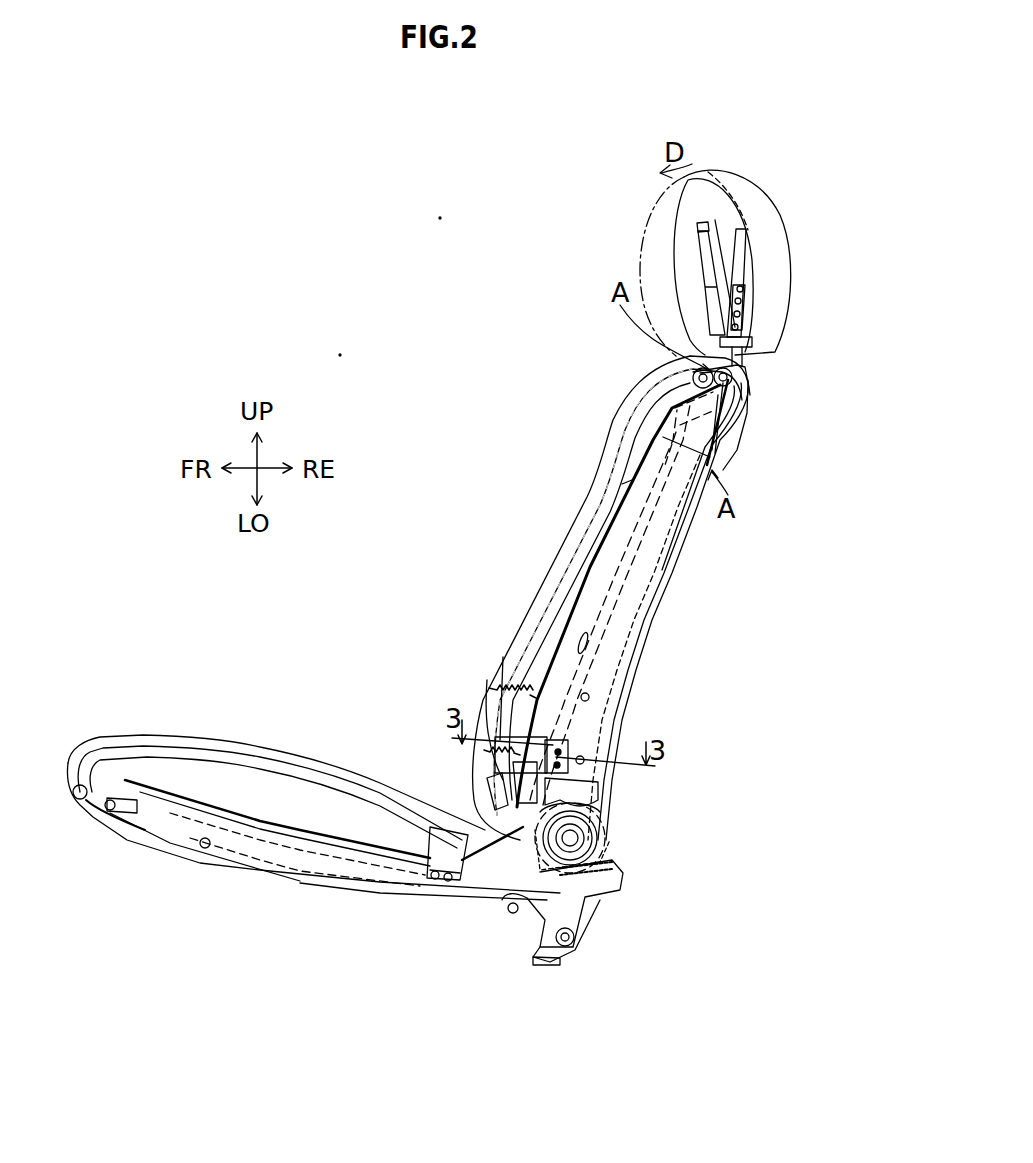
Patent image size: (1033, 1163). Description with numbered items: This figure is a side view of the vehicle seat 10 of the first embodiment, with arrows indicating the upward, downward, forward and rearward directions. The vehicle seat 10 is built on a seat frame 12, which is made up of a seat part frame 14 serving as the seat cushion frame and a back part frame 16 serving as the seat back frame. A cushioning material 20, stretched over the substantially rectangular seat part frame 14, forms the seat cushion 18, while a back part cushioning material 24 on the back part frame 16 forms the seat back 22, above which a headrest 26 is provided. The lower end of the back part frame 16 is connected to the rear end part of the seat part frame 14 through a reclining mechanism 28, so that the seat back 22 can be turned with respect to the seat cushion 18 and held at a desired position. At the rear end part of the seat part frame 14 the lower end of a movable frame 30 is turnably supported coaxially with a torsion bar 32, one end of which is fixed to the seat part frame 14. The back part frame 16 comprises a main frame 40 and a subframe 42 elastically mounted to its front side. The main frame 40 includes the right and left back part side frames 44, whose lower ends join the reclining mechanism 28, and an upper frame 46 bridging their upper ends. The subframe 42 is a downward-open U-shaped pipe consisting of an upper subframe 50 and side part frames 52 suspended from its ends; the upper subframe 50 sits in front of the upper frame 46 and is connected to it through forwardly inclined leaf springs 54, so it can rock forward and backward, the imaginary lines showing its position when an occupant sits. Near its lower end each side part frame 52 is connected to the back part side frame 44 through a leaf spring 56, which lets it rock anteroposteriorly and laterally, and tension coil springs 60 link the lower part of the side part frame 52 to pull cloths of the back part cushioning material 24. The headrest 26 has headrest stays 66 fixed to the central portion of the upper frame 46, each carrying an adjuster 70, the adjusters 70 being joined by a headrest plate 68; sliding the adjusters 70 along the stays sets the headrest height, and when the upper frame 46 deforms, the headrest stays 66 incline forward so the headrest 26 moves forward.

The vehicle seat 10 is at (420, 345).
The seat frame 12 is at (670, 611).
The seat part frame 14 is at (320, 860).
The back part frame 16 is at (762, 530).
The seat cushion 18 is at (280, 682).
The cushioning material 20 is at (165, 810).
The seat back 22 is at (513, 490).
The back part cushioning material 24 is at (612, 598).
The headrest 26 is at (700, 172).
The reclining mechanism 28 is at (597, 837).
The movable frame 30 is at (598, 912).
The torsion bar 32 is at (562, 950).
The main frame 40 is at (700, 505).
The subframe 42 is at (622, 484).
The back part side frame 44 is at (638, 585).
The upper frame 46 is at (742, 396).
The upper subframe 50 is at (690, 366).
The side part frame 52 is at (612, 428).
The leaf spring 54 is at (728, 425).
The leaf spring 56 is at (555, 748).
The tension coil spring 60 is at (497, 690).
The headrest stay 66 is at (750, 230).
The headrest plate 68 is at (718, 232).
The adjuster 70 is at (748, 295).